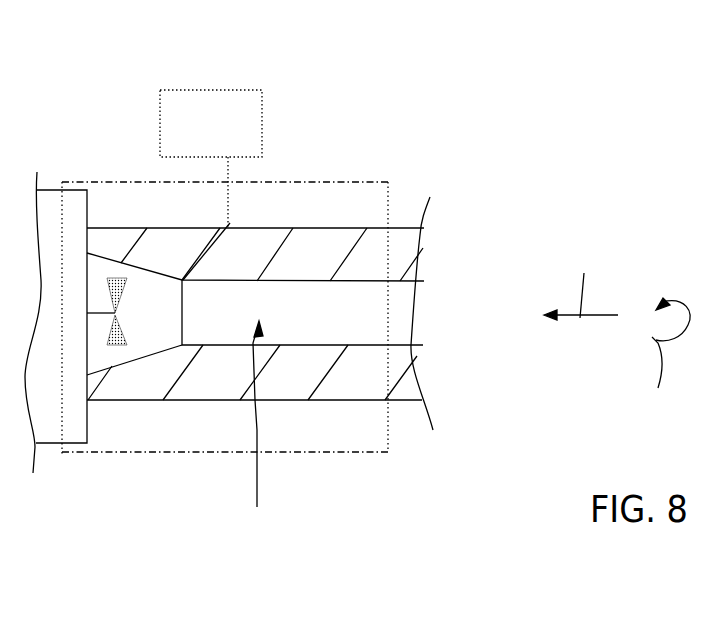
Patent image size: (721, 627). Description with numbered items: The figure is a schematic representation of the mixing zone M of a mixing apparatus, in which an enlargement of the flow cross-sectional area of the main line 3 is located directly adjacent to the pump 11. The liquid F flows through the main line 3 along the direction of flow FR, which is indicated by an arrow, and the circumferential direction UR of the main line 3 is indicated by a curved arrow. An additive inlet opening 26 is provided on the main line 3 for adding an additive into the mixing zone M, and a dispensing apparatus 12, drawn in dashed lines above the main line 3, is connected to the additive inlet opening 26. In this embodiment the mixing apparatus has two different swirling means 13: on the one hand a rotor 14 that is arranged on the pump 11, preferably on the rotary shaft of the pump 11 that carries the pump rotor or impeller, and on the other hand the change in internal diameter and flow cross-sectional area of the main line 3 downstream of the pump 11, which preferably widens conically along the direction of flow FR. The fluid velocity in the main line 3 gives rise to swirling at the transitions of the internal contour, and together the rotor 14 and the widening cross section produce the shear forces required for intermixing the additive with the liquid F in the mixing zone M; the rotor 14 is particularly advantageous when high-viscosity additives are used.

The main line 3 is at (337, 332).
The pump 11 is at (47, 443).
The dispensing apparatus 12 is at (230, 108).
The swirling means 13 is at (141, 262).
The rotor 14 is at (117, 355).
The additive inlet opening 26 is at (230, 223).
The mixing zone M is at (379, 178).
The liquid F is at (255, 435).
The direction of flow FR is at (581, 275).
The circumferential direction UR is at (664, 365).